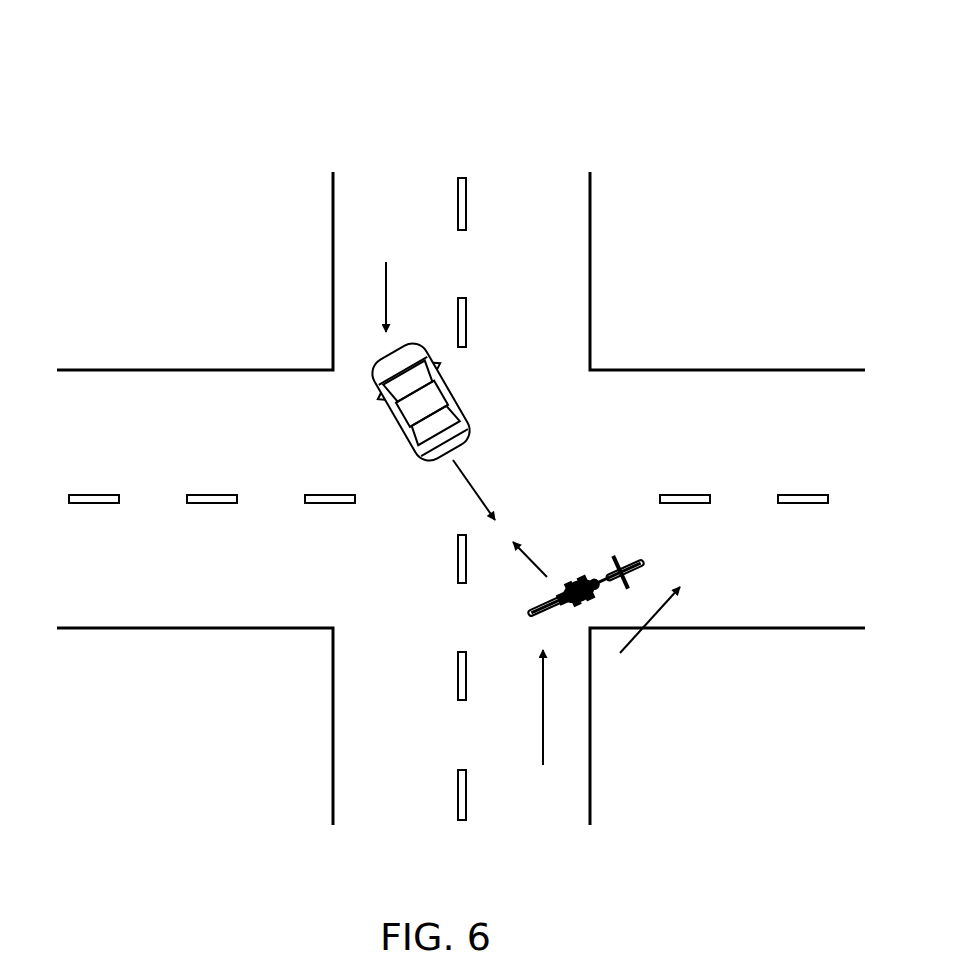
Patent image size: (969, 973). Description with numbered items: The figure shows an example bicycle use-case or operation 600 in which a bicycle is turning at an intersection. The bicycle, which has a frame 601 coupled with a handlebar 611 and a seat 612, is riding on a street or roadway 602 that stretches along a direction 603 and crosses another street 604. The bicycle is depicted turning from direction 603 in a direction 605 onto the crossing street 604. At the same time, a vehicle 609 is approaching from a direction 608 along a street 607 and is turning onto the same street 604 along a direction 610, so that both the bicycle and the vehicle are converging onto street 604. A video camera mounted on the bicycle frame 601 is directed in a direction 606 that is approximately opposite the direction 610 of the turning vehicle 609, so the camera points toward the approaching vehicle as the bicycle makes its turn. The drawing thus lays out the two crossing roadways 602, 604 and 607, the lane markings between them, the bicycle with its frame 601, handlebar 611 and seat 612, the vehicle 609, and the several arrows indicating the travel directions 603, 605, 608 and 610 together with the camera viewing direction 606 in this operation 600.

The bicycle use-case or operation 600 is at (732, 78).
The frame 601 is at (597, 566).
The street or roadway 602 is at (575, 742).
The direction 603 is at (543, 747).
The street 604 is at (770, 605).
The direction 605 is at (668, 625).
The direction 606 is at (513, 545).
The street 607 is at (355, 210).
The direction 608 is at (380, 295).
The vehicle 609 is at (428, 392).
The direction 610 is at (486, 508).
The handlebar 611 is at (624, 560).
The seat 612 is at (578, 603).